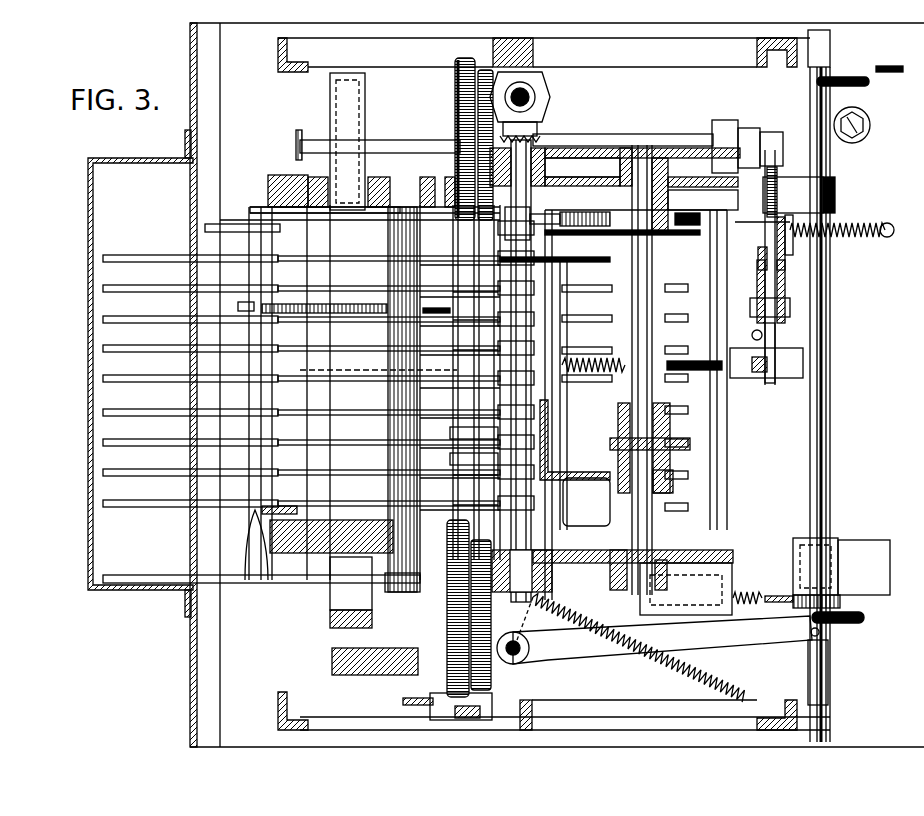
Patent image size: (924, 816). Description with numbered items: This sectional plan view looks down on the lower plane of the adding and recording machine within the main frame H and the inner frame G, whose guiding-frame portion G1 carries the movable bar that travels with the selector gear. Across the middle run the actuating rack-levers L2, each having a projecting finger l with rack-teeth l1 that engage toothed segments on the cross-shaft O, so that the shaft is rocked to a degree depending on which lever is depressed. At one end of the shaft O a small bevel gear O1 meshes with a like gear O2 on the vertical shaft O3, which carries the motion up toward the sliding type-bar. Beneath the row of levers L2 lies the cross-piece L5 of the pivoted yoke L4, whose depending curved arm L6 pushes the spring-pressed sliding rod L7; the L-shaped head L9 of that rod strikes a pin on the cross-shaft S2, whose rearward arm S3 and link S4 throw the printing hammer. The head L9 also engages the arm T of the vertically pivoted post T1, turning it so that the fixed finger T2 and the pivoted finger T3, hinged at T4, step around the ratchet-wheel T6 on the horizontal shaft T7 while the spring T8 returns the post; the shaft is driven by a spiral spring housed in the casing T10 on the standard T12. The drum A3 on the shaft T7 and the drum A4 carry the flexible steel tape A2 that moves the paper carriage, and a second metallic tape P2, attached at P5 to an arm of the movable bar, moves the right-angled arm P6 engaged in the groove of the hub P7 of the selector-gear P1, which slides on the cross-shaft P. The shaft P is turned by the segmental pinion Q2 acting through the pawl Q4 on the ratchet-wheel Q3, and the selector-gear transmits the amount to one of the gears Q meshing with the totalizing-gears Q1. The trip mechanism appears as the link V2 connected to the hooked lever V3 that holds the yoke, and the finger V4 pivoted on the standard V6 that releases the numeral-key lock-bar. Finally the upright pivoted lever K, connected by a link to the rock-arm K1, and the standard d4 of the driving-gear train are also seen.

The main frame H is at (755, 50).
The cross-shaft S2 is at (832, 352).
The rearwardly-extending arm S3 is at (870, 84).
The link S4 is at (893, 60).
The cross-piece L5 is at (256, 243).
The pivoted yoke L4 is at (258, 207).
The rack-levers L2 is at (352, 285).
The rearwardly-curved arm L6 is at (357, 382).
The sliding rod L7 is at (698, 361).
The L-shaped head L9 is at (748, 378).
The standard V6 is at (295, 553).
The trip finger V4 is at (285, 506).
The pivoted lever V3 is at (238, 302).
The link V2 is at (324, 298).
The standard T12 is at (274, 175).
The casing T10 is at (365, 93).
The horizontal shaft T7 is at (665, 145).
The vertically-pivoted post T1 is at (757, 280).
The pivot T4 is at (750, 310).
The pivoted finger T3 is at (758, 240).
The fixed finger T2 is at (792, 236).
The ratchet-wheel T6 is at (799, 195).
The spring T8 is at (858, 224).
The arm T is at (770, 383).
The drum A3 is at (455, 100).
The drum A4 is at (447, 620).
The flexible steel tape A2 is at (480, 330).
The cross-shaft O is at (552, 168).
The bevel gear O1 is at (530, 136).
The bevel gear O2 is at (537, 112).
The vertical shaft O3 is at (540, 82).
The gears Q is at (498, 250).
The totalizing-gears Q1 is at (592, 208).
The segmental pinion Q2 is at (703, 200).
The ratchet-wheel Q3 is at (600, 246).
The pawl Q4 is at (692, 226).
The projecting fingers l is at (442, 286).
The rack-teeth l1 is at (475, 384).
The cross-shaft P is at (630, 305).
The selector-gear P1 is at (672, 440).
The metallic tape P2 is at (460, 490).
The attachment point P5 is at (460, 458).
The right-angled arm P6 is at (580, 485).
The hub P7 is at (673, 490).
The inner frame G is at (580, 550).
The guiding-frame portion G1 is at (562, 335).
The standard d4 is at (330, 614).
The upright pivoted lever K is at (485, 700).
The rock-arm K1 is at (418, 689).